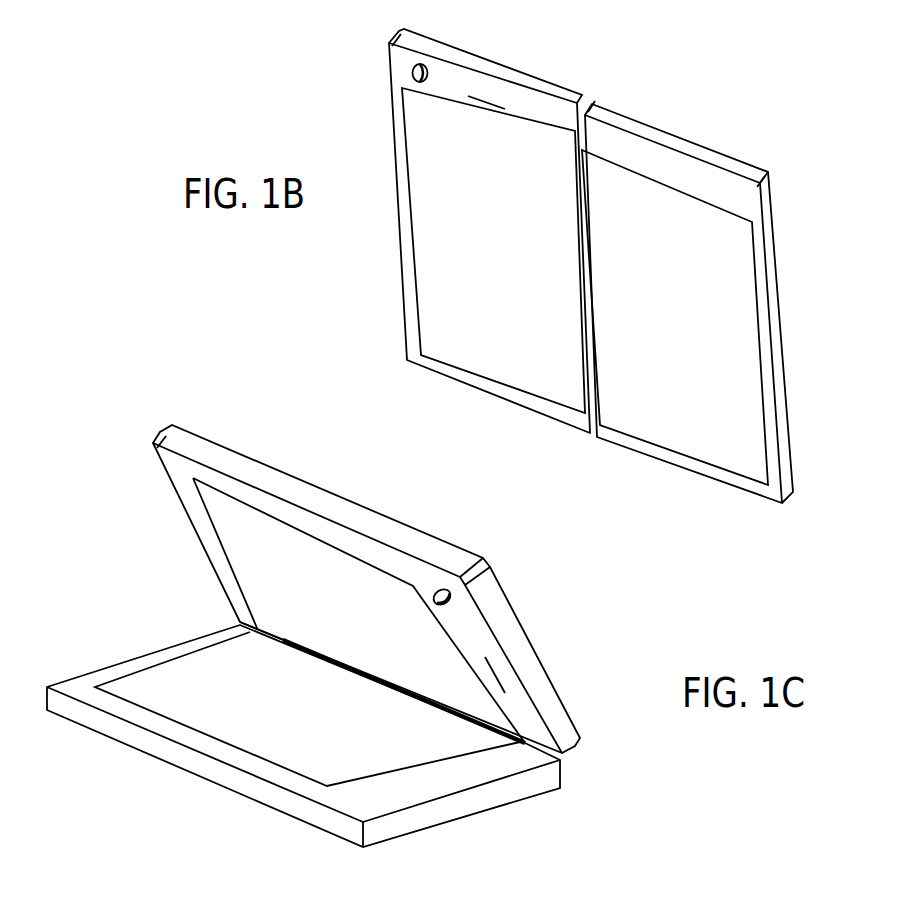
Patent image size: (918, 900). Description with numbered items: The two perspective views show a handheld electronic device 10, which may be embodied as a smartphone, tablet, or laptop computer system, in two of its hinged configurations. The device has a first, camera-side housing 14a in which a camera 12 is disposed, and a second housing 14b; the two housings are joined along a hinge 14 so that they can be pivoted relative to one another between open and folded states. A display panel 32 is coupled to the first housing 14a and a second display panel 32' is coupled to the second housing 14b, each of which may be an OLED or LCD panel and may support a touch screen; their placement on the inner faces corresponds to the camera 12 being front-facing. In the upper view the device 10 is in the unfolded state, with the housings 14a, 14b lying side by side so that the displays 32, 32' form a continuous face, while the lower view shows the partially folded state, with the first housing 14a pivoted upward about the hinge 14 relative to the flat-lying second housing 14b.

In FIG. 1B, the handheld electronic device 10 is at (352, 300).
In FIG. 1C, the handheld electronic device 10 is at (136, 604).
In FIG. 1B, the camera 12 is at (410, 66).
In FIG. 1C, the camera 12 is at (435, 590).
In FIG. 1C, the hinge 14 is at (378, 683).
In FIG. 1B, the first housing 14a is at (487, 60).
In FIG. 1C, the first housing 14a is at (497, 579).
In FIG. 1B, the second housing 14b is at (673, 134).
In FIG. 1C, the second housing 14b is at (247, 800).
In FIG. 1B, the display panel 32 is at (493, 250).
In FIG. 1C, the display panel 32 is at (359, 610).
In FIG. 1B, the display panel 32' is at (675, 317).
In FIG. 1C, the display panel 32' is at (307, 709).